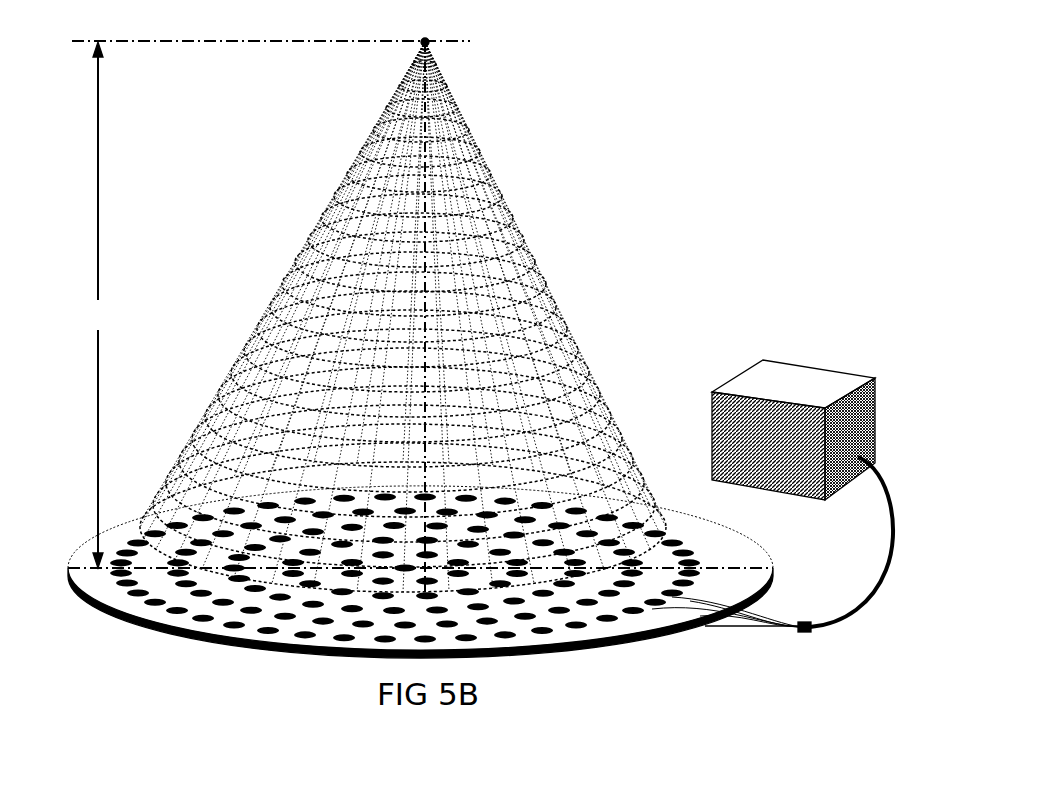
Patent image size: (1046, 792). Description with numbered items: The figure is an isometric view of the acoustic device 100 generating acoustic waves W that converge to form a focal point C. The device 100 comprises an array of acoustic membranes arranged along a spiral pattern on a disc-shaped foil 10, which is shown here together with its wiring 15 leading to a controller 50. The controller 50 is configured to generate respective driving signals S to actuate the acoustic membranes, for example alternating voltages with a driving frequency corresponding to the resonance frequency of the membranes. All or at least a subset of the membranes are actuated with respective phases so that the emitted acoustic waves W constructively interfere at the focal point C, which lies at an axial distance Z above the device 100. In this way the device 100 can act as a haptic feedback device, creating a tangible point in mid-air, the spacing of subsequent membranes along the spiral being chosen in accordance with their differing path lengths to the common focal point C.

The acoustic device 100 is at (790, 192).
The controller 50 is at (737, 352).
The detector array disc 10 is at (72, 507).
The wiring bundle 15 is at (731, 631).
The focal point C is at (436, 31).
The axial distance Z is at (98, 305).
The acoustic waves W is at (359, 395).
The driving signals S is at (851, 542).